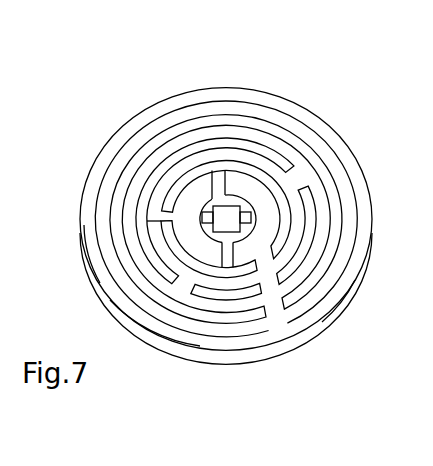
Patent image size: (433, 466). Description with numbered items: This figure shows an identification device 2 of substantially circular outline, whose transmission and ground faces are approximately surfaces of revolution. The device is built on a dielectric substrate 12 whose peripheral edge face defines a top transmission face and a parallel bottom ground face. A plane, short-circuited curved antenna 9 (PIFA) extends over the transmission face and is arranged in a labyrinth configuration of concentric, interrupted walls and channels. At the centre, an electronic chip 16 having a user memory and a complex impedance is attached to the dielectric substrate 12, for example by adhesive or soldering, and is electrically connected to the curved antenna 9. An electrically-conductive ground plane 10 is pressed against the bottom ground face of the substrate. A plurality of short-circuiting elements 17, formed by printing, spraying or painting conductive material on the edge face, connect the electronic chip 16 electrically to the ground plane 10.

The identification device 2 is at (144, 66).
The curved antenna 9 is at (128, 152).
The ground plane 10 is at (244, 365).
The dielectric substrate 12 is at (167, 343).
The electronic chip 16 is at (228, 217).
The short-circuiting element 17 is at (106, 305).